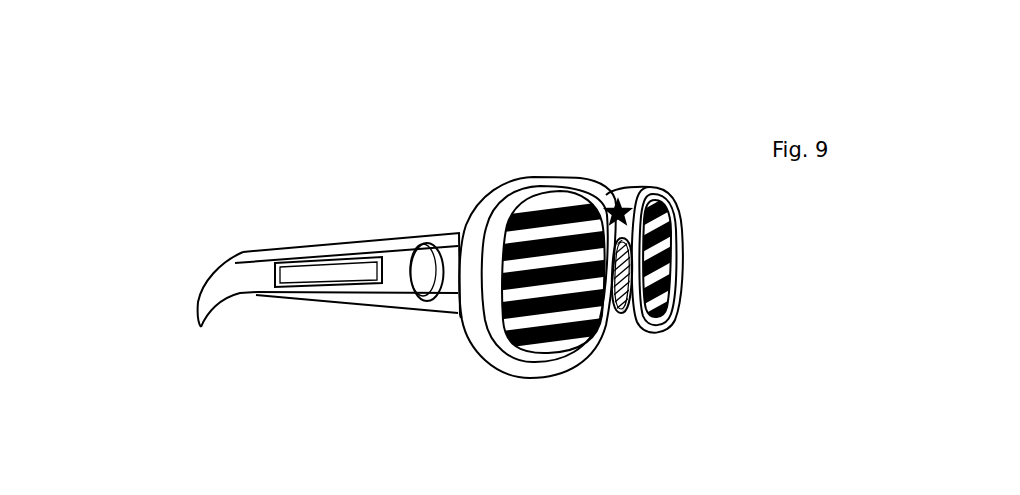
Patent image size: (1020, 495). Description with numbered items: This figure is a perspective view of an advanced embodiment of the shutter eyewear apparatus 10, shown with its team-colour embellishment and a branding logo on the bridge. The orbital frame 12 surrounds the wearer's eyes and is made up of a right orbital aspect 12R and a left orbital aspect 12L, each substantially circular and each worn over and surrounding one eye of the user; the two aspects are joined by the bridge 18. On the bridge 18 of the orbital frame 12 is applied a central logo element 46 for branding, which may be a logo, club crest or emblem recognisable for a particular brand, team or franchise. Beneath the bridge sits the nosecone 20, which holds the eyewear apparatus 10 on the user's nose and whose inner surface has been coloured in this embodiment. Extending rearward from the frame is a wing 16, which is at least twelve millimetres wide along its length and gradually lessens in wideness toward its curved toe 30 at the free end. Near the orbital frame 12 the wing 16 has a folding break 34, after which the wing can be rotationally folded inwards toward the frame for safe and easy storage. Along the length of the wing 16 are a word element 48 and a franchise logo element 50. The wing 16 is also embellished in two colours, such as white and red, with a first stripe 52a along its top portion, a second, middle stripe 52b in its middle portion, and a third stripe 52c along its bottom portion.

The shutter eyewear apparatus 10 is at (137, 129).
The orbital frame 12 is at (485, 180).
The right orbital aspect 12R is at (550, 379).
The left orbital aspect 12L is at (698, 256).
The wing 16 is at (323, 233).
The bridge 18 is at (605, 189).
The nosecone 20 is at (624, 308).
The curved toe 30 is at (188, 314).
The folding break 34 is at (463, 321).
The central logo element 46 is at (628, 192).
The word element 48 is at (289, 295).
The franchise logo element 50 is at (418, 298).
The first stripe 52a is at (388, 239).
The second stripe 52b is at (250, 275).
The third stripe 52c is at (362, 302).